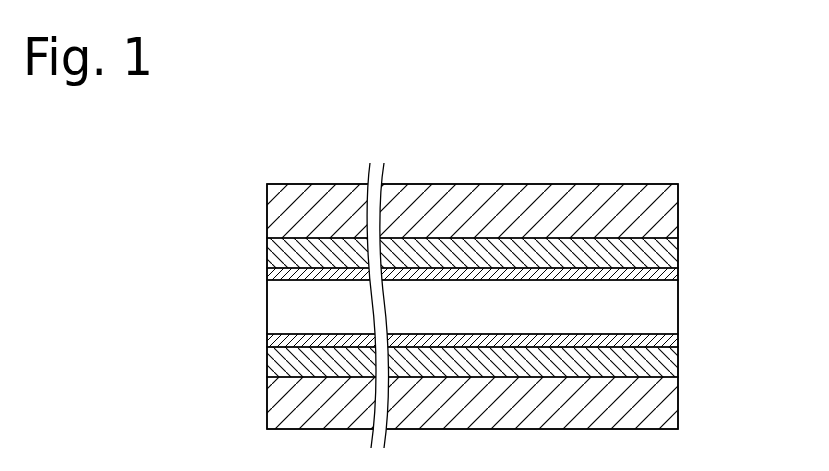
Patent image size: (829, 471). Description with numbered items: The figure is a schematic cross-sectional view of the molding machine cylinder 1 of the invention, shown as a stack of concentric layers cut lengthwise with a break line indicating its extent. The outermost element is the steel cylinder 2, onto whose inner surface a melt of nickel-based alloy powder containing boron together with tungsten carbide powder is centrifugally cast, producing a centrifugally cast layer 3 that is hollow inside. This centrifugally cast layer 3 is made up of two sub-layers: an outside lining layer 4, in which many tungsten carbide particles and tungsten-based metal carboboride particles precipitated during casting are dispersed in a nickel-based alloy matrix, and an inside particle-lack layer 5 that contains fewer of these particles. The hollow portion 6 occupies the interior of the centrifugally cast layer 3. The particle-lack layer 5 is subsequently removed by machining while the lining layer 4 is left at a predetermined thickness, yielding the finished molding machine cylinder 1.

The molding machine cylinder 1 is at (516, 280).
The steel cylinder 2 is at (668, 403).
The centrifugally cast layer 3 is at (516, 351).
The lining layer 4 is at (669, 360).
The particle-lack layer 5 is at (669, 338).
The hollow portion 6 is at (668, 305).